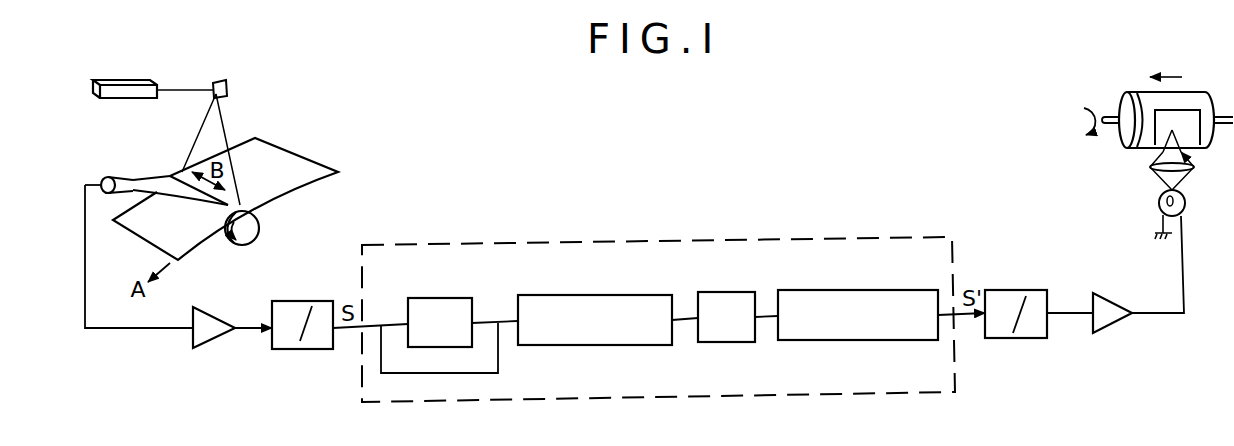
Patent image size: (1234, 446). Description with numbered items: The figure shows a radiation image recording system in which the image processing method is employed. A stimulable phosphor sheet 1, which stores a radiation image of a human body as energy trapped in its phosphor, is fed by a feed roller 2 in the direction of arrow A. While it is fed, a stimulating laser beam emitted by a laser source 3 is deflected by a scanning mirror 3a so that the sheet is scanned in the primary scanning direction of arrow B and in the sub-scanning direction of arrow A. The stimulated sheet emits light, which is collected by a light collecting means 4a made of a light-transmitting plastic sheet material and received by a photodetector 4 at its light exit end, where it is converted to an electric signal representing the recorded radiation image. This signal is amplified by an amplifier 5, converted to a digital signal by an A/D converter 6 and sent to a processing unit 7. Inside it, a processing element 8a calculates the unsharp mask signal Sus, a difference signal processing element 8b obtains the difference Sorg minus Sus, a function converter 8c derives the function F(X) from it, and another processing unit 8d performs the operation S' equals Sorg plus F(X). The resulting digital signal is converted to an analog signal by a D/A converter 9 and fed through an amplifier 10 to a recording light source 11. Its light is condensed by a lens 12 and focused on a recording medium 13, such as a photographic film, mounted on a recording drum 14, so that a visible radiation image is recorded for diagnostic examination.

The stimulable phosphor sheet 1 is at (311, 170).
The feed roller 2 is at (253, 228).
The laser source 3 is at (140, 80).
The scanning mirror 3a is at (226, 82).
The photodetector 4 is at (110, 177).
The light collecting means 4a is at (158, 178).
The amplifier 5 is at (217, 338).
The A/D converter 6 is at (316, 301).
The processing unit 7 is at (770, 237).
The processing element for calculating the unsharp mask signal 8a is at (452, 298).
The difference signal processing element 8b is at (600, 295).
The function converter 8c is at (727, 292).
The processing unit 8d is at (877, 290).
The D/A converter 9 is at (1022, 290).
The amplifier 10 is at (1120, 327).
The recording light source 11 is at (1160, 208).
The lens 12 is at (1150, 168).
The recording medium 13 is at (1190, 135).
The recording drum 14 is at (1200, 98).